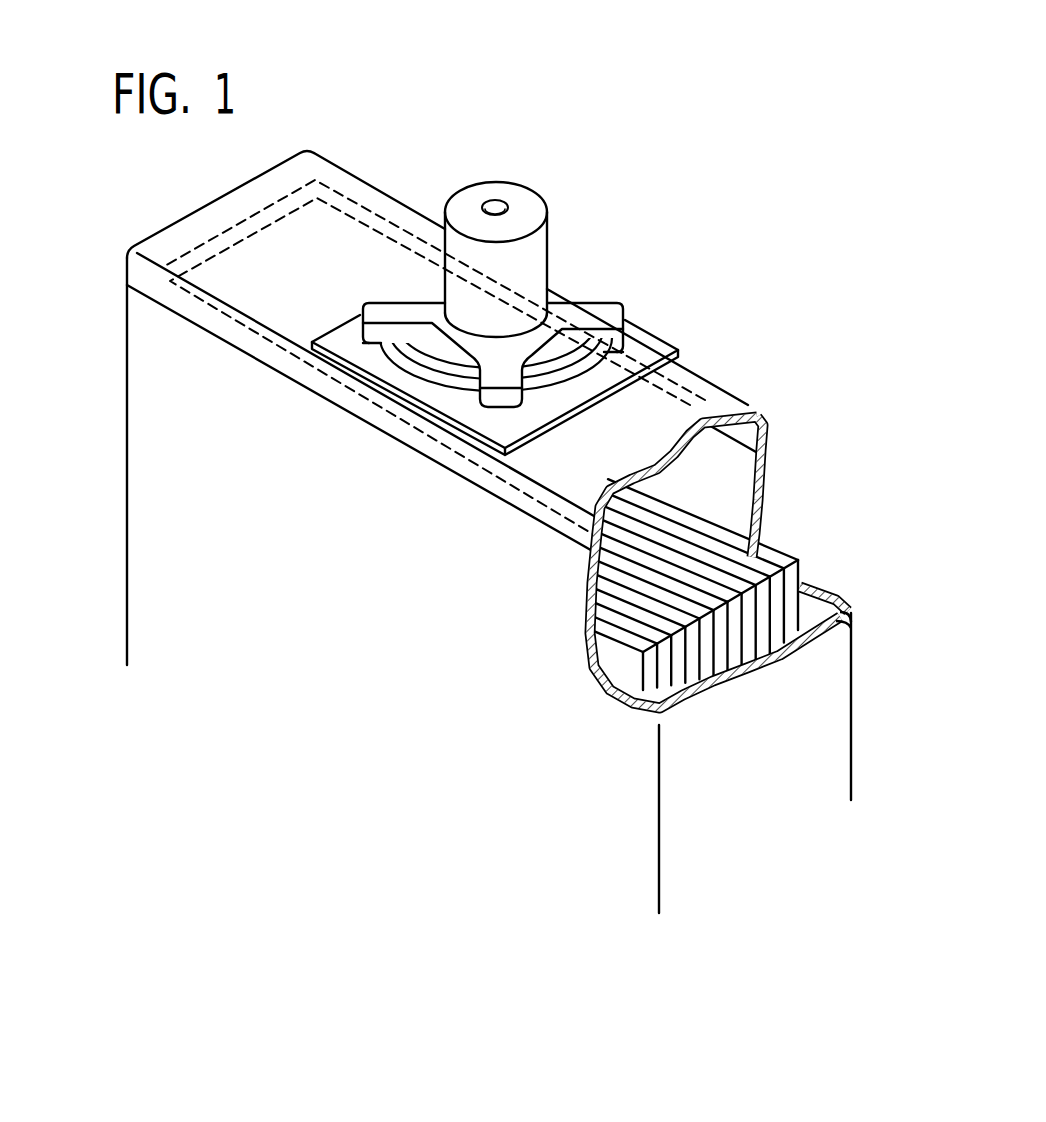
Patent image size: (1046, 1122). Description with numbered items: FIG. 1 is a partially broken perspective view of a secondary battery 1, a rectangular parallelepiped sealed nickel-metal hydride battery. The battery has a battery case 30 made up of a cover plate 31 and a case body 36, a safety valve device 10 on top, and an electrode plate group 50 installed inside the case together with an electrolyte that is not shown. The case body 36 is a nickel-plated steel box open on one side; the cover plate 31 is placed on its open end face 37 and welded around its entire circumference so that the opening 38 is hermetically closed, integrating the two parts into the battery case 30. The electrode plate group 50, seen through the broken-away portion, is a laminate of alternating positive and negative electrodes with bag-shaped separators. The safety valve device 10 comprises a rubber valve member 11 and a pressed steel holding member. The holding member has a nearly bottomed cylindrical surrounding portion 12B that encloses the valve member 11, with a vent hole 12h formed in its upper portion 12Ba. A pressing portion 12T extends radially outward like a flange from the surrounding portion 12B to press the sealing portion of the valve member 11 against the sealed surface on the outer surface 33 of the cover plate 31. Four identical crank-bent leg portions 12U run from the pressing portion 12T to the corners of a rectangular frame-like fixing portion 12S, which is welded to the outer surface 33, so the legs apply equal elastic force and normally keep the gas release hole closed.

The secondary battery 1 is at (617, 113).
The safety valve device 10 is at (543, 242).
The valve member 11 is at (428, 348).
The surrounding portion 12B is at (538, 273).
The upper portion of the surrounding portion 12Ba is at (528, 198).
The vent hole 12h is at (495, 201).
The fixing portion 12S is at (640, 392).
The pressing portion 12T is at (593, 383).
The leg portions 12U is at (387, 308).
The battery case 30 is at (108, 167).
The cover plate 31 is at (183, 232).
The outer surface of the cover plate 33 is at (358, 230).
The case body 36 is at (142, 325).
The open end face 37 is at (312, 372).
The opening 38 is at (425, 447).
The electrode plate group 50 is at (650, 676).